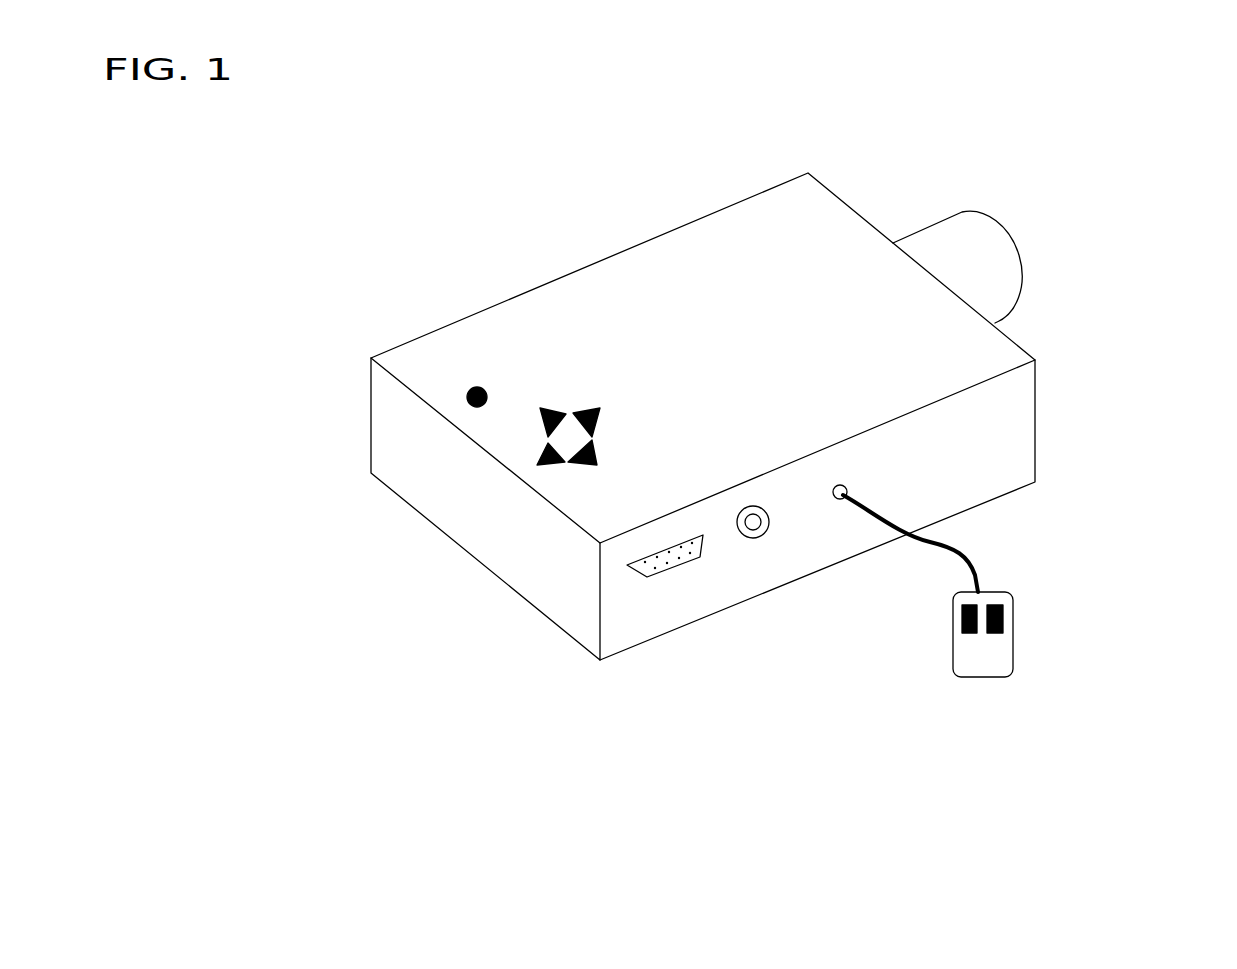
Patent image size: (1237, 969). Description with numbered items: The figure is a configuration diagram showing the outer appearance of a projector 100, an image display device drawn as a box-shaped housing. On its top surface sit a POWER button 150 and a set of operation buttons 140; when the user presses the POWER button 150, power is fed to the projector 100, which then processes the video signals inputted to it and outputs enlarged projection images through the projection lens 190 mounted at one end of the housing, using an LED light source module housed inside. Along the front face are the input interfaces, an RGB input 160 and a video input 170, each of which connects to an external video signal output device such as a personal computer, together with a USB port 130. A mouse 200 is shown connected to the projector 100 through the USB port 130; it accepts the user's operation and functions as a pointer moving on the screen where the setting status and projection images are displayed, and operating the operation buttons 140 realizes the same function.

The projector 100 is at (392, 191).
The projection lens 190 is at (1047, 172).
The POWER button 150 is at (465, 399).
The operation buttons 140 is at (540, 458).
The RGB input 160 is at (670, 577).
The video input 170 is at (752, 538).
The USB port 130 is at (848, 495).
The mouse 200 is at (1013, 636).